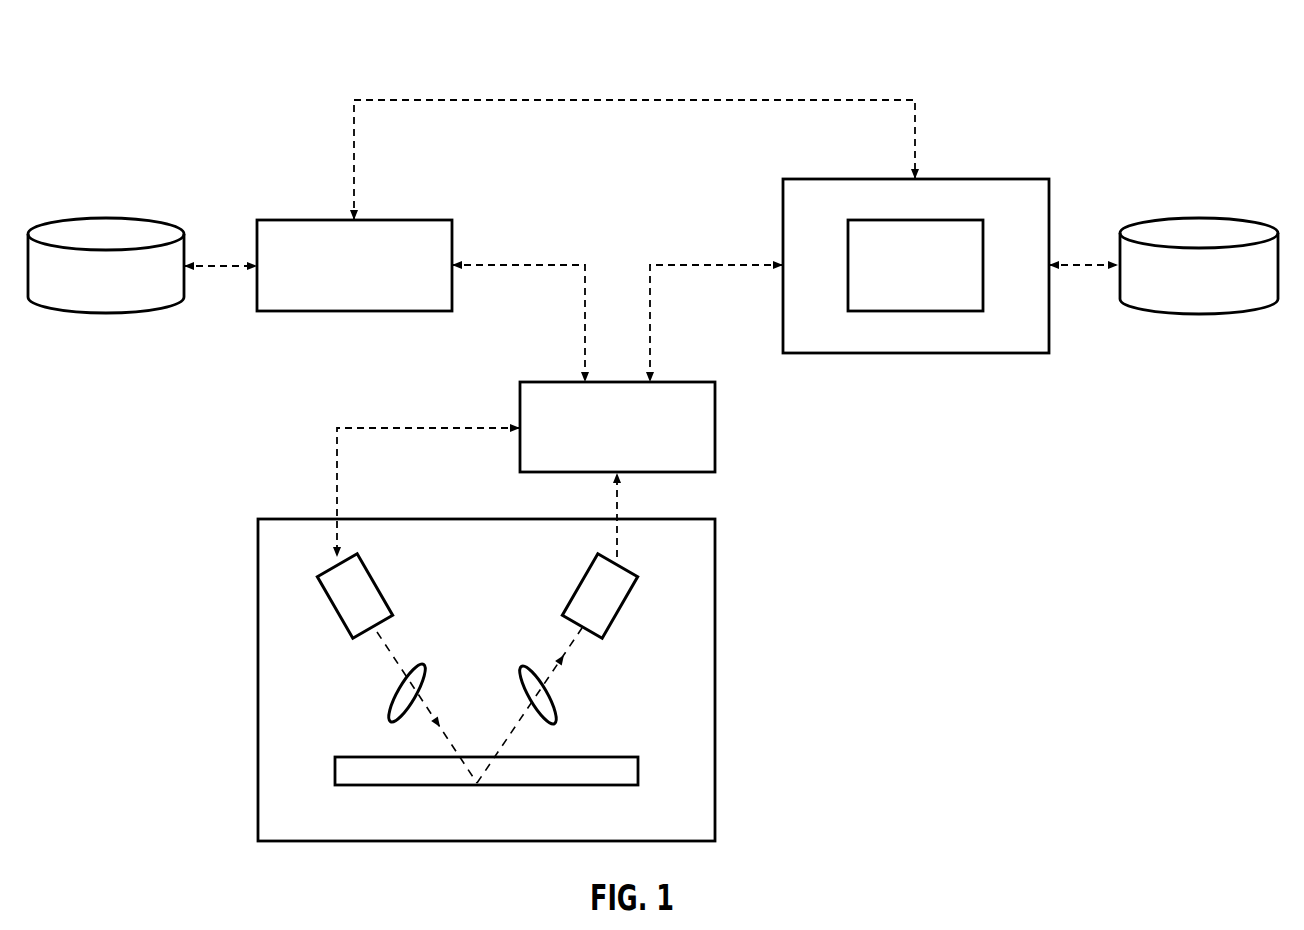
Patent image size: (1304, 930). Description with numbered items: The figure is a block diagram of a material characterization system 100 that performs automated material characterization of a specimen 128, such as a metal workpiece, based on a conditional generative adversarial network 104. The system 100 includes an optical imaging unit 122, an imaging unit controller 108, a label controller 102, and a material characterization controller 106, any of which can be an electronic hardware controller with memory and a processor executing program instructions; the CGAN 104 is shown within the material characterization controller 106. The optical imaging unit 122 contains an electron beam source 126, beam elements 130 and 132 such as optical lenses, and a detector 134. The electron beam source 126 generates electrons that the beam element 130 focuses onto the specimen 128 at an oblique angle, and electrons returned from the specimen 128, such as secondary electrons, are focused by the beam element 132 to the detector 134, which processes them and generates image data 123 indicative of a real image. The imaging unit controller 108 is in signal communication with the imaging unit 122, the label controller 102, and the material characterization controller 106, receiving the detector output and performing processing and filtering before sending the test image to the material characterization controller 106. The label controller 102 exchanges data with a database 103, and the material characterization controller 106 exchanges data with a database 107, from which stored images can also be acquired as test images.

The material characterization system 100 is at (180, 70).
The label controller 102 is at (313, 220).
The database 103 is at (106, 233).
The conditional generative adversarial network 104 is at (918, 219).
The material characterization controller 106 is at (983, 178).
The database 107 is at (1200, 232).
The imaging unit controller 108 is at (718, 428).
The optical imaging unit 122 is at (316, 517).
The image data 123 is at (620, 528).
The electron beam source 126 is at (377, 583).
The specimen 128 is at (382, 755).
The beam element 130 is at (403, 683).
The beam element 132 is at (552, 690).
The detector 134 is at (580, 582).